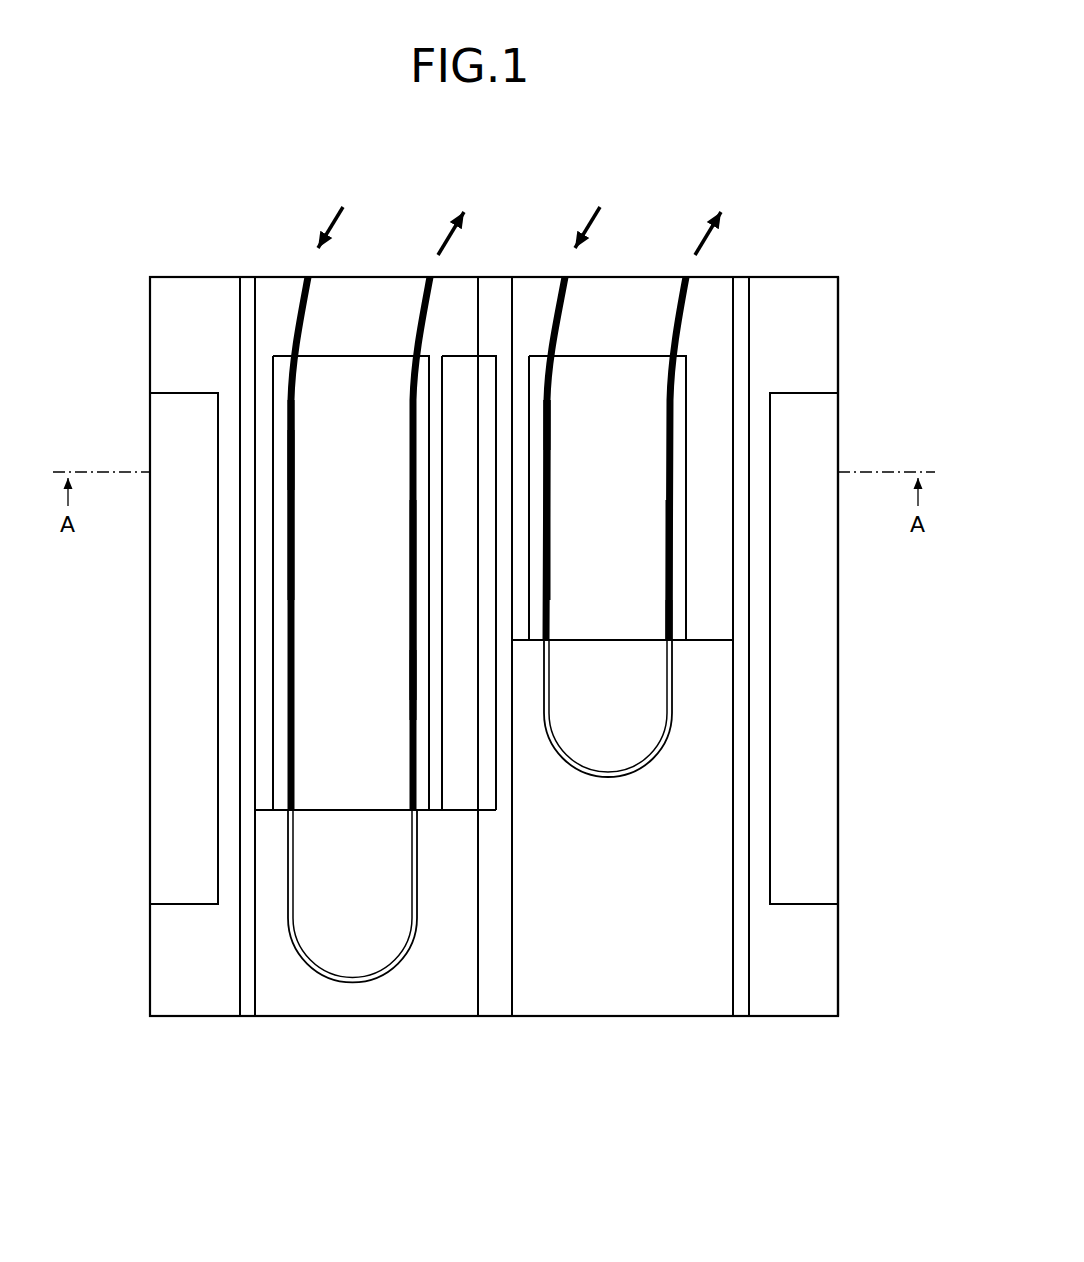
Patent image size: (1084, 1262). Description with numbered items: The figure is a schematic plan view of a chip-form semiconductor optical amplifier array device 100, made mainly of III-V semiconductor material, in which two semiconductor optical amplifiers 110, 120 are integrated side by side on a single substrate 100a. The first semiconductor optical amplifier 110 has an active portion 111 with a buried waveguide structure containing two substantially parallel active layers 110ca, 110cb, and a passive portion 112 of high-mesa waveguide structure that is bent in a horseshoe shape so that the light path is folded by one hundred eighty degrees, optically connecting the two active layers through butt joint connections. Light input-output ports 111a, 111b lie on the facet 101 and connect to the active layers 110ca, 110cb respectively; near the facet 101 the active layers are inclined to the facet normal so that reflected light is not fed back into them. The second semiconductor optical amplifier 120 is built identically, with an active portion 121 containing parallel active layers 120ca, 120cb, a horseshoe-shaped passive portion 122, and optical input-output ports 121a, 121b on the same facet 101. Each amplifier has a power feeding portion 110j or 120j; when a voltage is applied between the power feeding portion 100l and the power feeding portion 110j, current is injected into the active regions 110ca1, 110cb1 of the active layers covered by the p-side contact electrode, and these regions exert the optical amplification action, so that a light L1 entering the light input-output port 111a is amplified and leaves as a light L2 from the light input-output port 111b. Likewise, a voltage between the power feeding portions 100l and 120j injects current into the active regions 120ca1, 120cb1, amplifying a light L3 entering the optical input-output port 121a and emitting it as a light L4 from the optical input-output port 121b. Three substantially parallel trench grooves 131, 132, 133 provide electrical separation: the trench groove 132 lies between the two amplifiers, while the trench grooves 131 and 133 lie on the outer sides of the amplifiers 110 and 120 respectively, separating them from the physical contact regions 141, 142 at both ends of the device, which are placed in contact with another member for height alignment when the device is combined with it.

The semiconductor optical amplifier array device 100 is at (852, 258).
The substrate 100a is at (838, 952).
The power feeding portion 100l is at (458, 812).
The facet 101 is at (169, 277).
The semiconductor optical amplifier 110 is at (406, 976).
The power feeding portion 110j is at (358, 812).
The active layer 110ca is at (297, 385).
The active region 110ca1 is at (295, 457).
The active layer 110cb is at (411, 590).
The active region 110cb1 is at (409, 680).
The active portion 111 is at (272, 300).
The light input-output port 111a is at (308, 277).
The light input-output port 111b is at (430, 277).
The passive portion 112 is at (352, 985).
The semiconductor optical amplifier 120 is at (625, 795).
The power feeding portion 120j is at (608, 642).
The active layer 120ca is at (552, 470).
The active region 120ca1 is at (550, 418).
The active layer 120cb is at (665, 590).
The active region 120cb1 is at (665, 630).
The active portion 121 is at (703, 297).
The optical input-output port 121a is at (565, 277).
The optical input-output port 121b is at (686, 277).
The passive portion 122 is at (578, 770).
The trench groove 131 is at (247, 337).
The trench groove 132 is at (494, 303).
The trench groove 133 is at (740, 307).
The physical contact region 141 is at (165, 611).
The physical contact region 142 is at (820, 611).
The light L1 is at (318, 243).
The light L2 is at (440, 250).
The light L3 is at (572, 245).
The light L4 is at (694, 250).